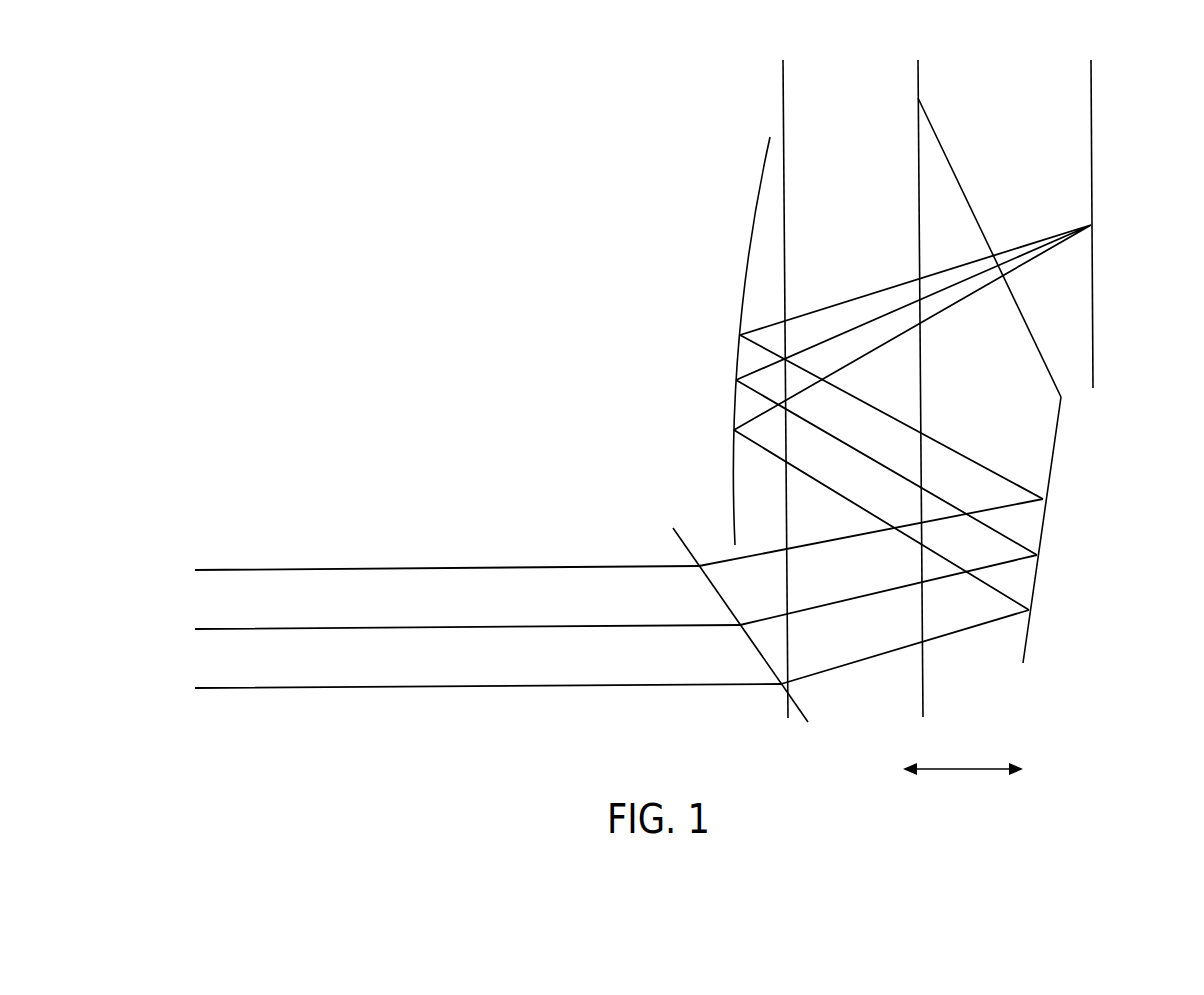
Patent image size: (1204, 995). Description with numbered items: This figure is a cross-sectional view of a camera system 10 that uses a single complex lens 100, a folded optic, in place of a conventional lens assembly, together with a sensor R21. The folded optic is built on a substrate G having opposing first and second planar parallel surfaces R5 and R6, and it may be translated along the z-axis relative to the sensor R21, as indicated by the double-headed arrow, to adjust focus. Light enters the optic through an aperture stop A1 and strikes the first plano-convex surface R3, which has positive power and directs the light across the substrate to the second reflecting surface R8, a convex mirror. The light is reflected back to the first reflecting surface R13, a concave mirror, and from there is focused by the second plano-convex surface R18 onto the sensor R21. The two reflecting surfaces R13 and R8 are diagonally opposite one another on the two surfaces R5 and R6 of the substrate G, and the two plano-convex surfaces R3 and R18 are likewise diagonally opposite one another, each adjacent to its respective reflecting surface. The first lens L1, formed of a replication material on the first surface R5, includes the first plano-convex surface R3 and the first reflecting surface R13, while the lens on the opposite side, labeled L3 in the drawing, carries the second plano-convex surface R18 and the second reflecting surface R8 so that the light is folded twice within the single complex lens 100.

The camera system 10 is at (522, 94).
The single complex lens 100 is at (805, 250).
The substrate G is at (838, 180).
The first lens L1 is at (745, 493).
The third lens L3 is at (1041, 421).
The aperture stop A1 is at (680, 542).
The first plano-convex surface R3 is at (755, 655).
The first planar parallel surface R5 is at (790, 632).
The second planar parallel surface R6 is at (923, 623).
The second reflecting surface R8 is at (1038, 582).
The first reflecting surface R13 is at (760, 180).
The second plano-convex surface R18 is at (957, 158).
The sensor R21 is at (1093, 137).